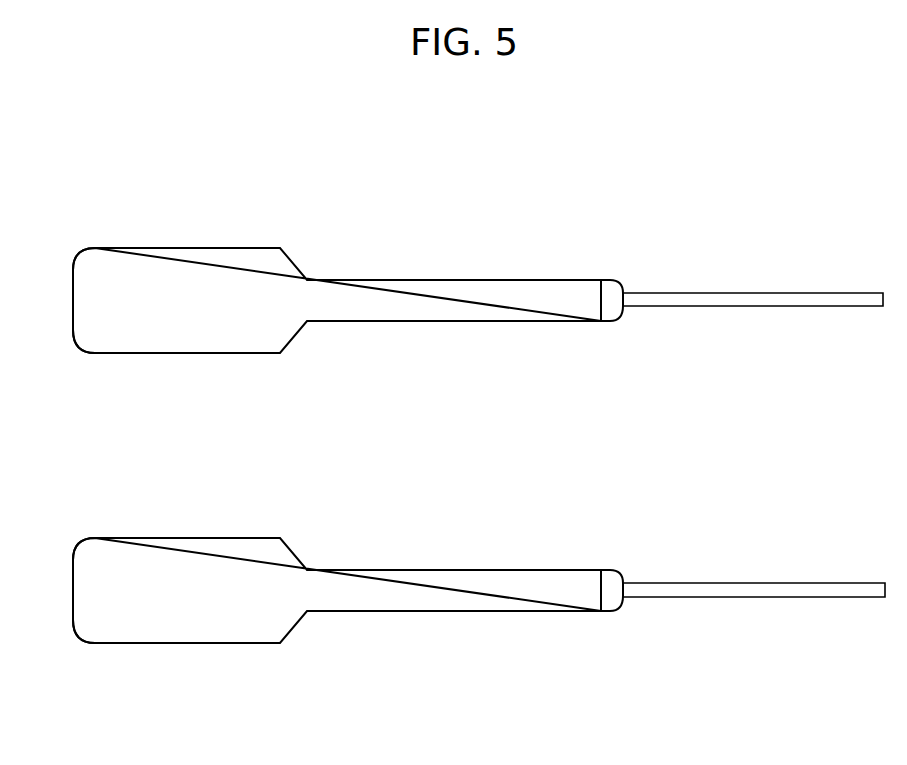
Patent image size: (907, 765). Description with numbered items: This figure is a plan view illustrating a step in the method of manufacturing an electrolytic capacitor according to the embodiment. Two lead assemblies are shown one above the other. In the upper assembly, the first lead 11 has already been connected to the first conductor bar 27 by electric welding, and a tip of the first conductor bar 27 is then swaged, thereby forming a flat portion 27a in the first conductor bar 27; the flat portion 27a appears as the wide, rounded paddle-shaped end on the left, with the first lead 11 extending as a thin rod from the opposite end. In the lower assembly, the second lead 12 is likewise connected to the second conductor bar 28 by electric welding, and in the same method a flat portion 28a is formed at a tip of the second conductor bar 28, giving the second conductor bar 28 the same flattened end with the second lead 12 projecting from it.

The first conductor bar 27 is at (458, 279).
The flat portion 27a is at (85, 238).
The first lead 11 is at (773, 293).
The second conductor bar 28 is at (446, 611).
The flat portion 28a is at (85, 648).
The second lead 12 is at (773, 598).